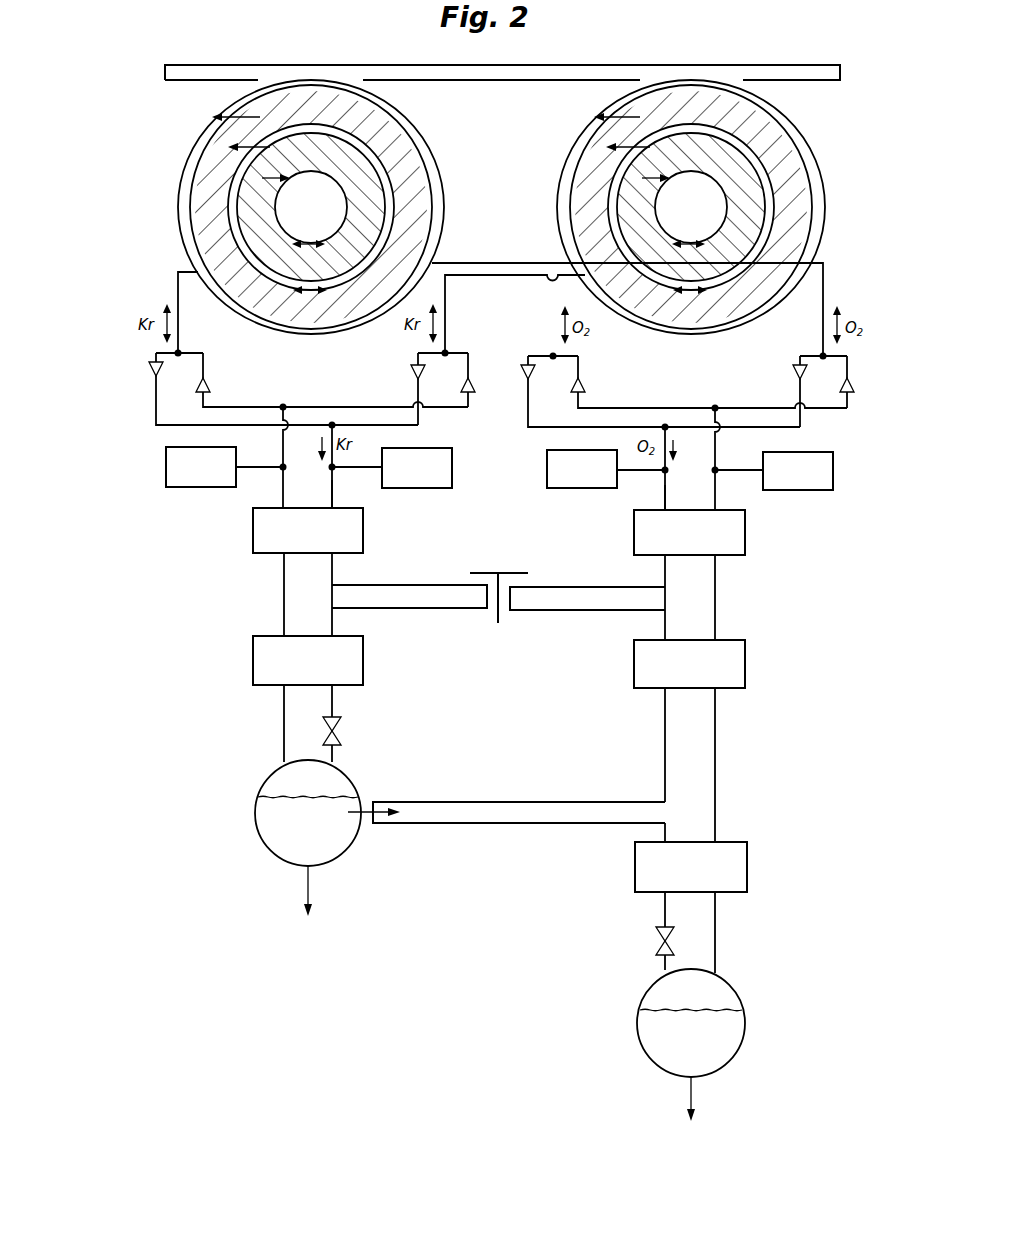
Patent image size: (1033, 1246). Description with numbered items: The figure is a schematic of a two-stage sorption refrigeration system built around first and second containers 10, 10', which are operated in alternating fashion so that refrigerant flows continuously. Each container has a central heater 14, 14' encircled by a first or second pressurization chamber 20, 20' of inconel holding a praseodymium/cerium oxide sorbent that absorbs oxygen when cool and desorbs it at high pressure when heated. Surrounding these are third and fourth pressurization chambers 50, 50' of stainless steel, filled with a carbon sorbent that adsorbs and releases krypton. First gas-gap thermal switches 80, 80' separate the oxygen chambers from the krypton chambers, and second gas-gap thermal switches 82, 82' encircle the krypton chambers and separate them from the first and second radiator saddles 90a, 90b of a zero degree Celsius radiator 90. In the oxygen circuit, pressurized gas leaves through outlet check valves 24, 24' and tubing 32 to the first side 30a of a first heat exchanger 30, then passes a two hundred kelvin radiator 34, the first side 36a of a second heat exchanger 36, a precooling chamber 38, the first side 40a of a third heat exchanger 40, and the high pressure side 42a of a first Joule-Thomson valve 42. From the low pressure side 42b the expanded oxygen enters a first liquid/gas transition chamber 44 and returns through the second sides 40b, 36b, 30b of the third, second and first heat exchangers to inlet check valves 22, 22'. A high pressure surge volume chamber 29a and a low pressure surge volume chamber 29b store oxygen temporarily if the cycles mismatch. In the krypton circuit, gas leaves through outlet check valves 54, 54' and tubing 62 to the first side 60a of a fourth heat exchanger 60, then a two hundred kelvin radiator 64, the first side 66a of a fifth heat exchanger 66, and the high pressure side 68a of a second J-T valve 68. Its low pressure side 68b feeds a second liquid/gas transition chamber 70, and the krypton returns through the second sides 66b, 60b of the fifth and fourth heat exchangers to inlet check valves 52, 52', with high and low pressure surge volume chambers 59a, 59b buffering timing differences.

The first container 10 is at (312, 170).
The second container 10' is at (688, 170).
The radiator 90 is at (582, 67).
The first radiator saddle 90a is at (424, 120).
The second radiator saddle 90b is at (792, 110).
The first gas-gap thermal switch 80 is at (268, 207).
The first gas-gap thermal switch 80' is at (647, 207).
The second gas-gap thermal switch 82 is at (286, 207).
The second gas-gap thermal switch 82' is at (664, 207).
The first pressurization chamber 20 is at (360, 207).
The second pressurization chamber 20' is at (738, 207).
The third pressurization chamber 50 is at (339, 207).
The fourth pressurization chamber 50' is at (717, 207).
The central heater 14 is at (311, 207).
The central heater 14' is at (691, 207).
The inlet check valve 52 is at (231, 379).
The inlet check valve 52' is at (486, 401).
The outlet check valve 54 is at (168, 385).
The outlet check valve 54' is at (398, 366).
The inlet check valve 22 is at (603, 382).
The inlet check valve 22' is at (854, 410).
The outlet check valve 24 is at (544, 388).
The outlet check valve 24' is at (778, 371).
The high pressure surge volume chamber 59a is at (398, 488).
The low pressure surge volume chamber 59b is at (174, 487).
The high pressure surge volume chamber 29a is at (558, 488).
The low pressure surge volume chamber 29b is at (780, 490).
The tubing 62 is at (333, 502).
The tubing 32 is at (668, 508).
The fourth heat exchanger 60 is at (307, 549).
The first side of fourth heat exchanger 60a is at (363, 541).
The second side of fourth heat exchanger 60b is at (253, 530).
The first heat exchanger 30 is at (703, 551).
The first side of first heat exchanger 30a is at (634, 522).
The second side of first heat exchanger 30b is at (745, 530).
The radiator 64 is at (447, 585).
The radiator 34 is at (548, 587).
The fifth heat exchanger 66 is at (309, 644).
The first side of fifth heat exchanger 66a is at (363, 655).
The second side of fifth heat exchanger 66b is at (253, 662).
The second heat exchanger 36 is at (692, 645).
The first side of second heat exchanger 36a is at (634, 665).
The second side of second heat exchanger 36b is at (745, 668).
The second Joule-Thomson valve 68 is at (356, 730).
The high pressure side of second J-T valve 68a is at (336, 717).
The low pressure side of second J-T valve 68b is at (335, 747).
The precooling chamber 38 is at (520, 802).
The second liquid/gas transition chamber 70 is at (263, 845).
The third heat exchanger 40 is at (694, 845).
The first side of third heat exchanger 40a is at (635, 855).
The second side of third heat exchanger 40b is at (747, 862).
The first Joule-Thomson valve 42 is at (648, 940).
The high pressure side of first J-T valve 42a is at (659, 930).
The low pressure side of first J-T valve 42b is at (658, 952).
The first liquid/gas transition chamber 44 is at (643, 1053).